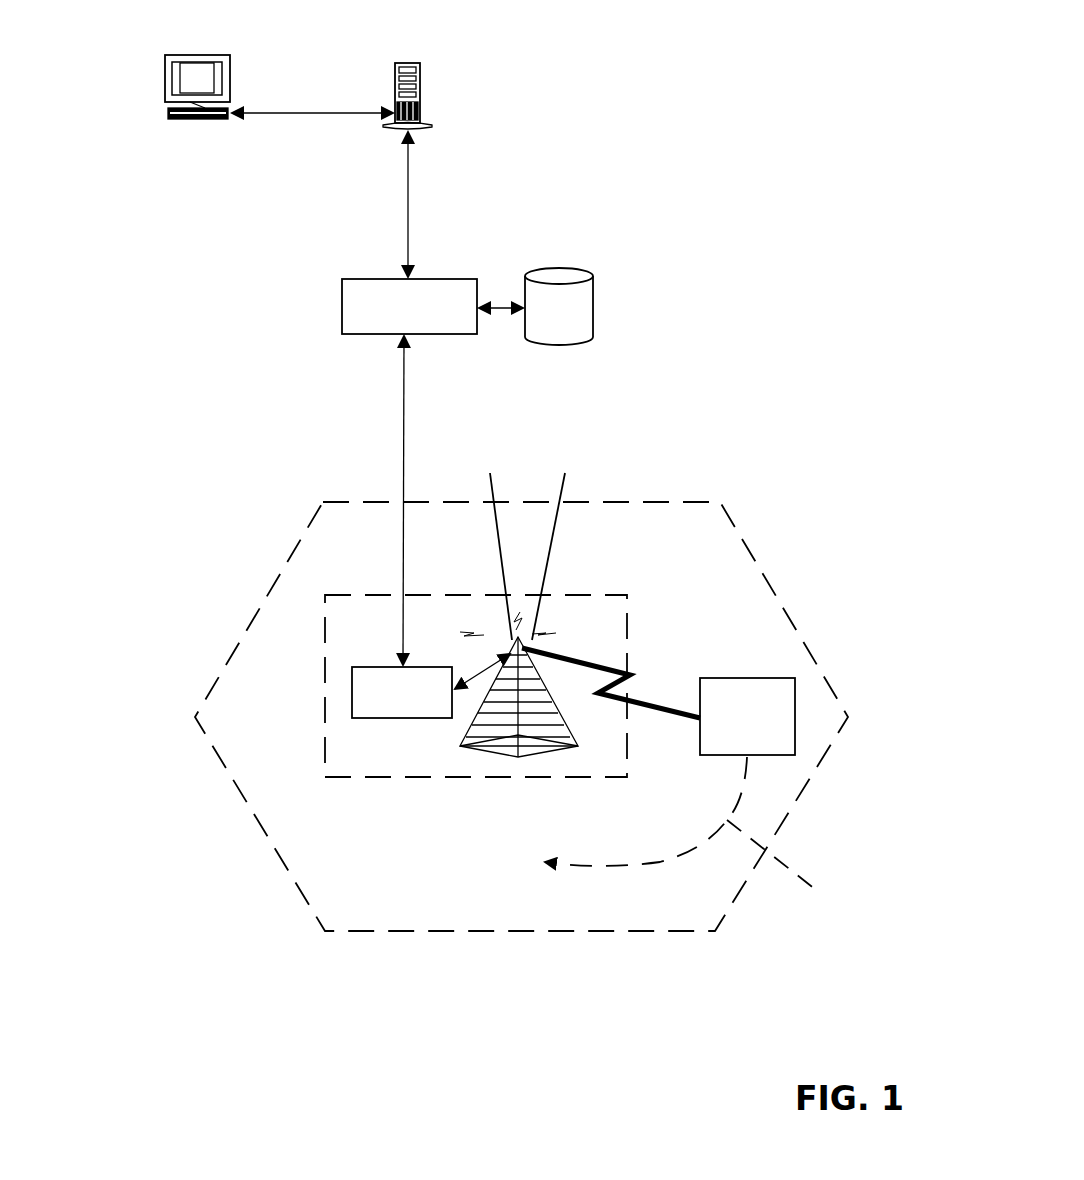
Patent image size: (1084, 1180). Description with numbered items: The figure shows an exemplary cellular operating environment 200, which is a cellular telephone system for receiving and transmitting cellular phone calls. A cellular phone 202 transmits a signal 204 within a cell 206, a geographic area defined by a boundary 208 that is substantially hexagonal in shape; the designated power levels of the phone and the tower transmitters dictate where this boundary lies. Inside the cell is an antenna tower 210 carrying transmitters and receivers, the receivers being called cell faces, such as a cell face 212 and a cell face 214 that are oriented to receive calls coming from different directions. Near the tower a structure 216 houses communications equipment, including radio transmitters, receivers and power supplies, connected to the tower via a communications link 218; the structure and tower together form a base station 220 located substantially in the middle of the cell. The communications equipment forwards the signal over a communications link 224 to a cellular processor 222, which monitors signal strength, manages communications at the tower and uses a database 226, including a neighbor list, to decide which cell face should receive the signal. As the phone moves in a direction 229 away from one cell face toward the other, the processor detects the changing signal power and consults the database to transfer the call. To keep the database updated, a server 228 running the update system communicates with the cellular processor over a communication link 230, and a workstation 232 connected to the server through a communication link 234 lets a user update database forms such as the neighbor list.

The operating environment 200 is at (720, 86).
The cellular phone 202 is at (795, 695).
The signal 204 is at (640, 697).
The cell 206 is at (345, 550).
The boundary 208 is at (740, 550).
The antenna tower 210 is at (510, 740).
The cell face 212 is at (490, 473).
The cell face 214 is at (565, 473).
The structure 216 is at (400, 718).
The communications link 218 is at (505, 655).
The base station 220 is at (322, 640).
The cellular processor 222 is at (342, 295).
The communications link 224 is at (400, 417).
The database 226 is at (593, 308).
The server 228 is at (420, 88).
The direction 229 is at (820, 893).
The communication link 230 is at (410, 208).
The workstation 232 is at (163, 88).
The communication link 234 is at (315, 113).